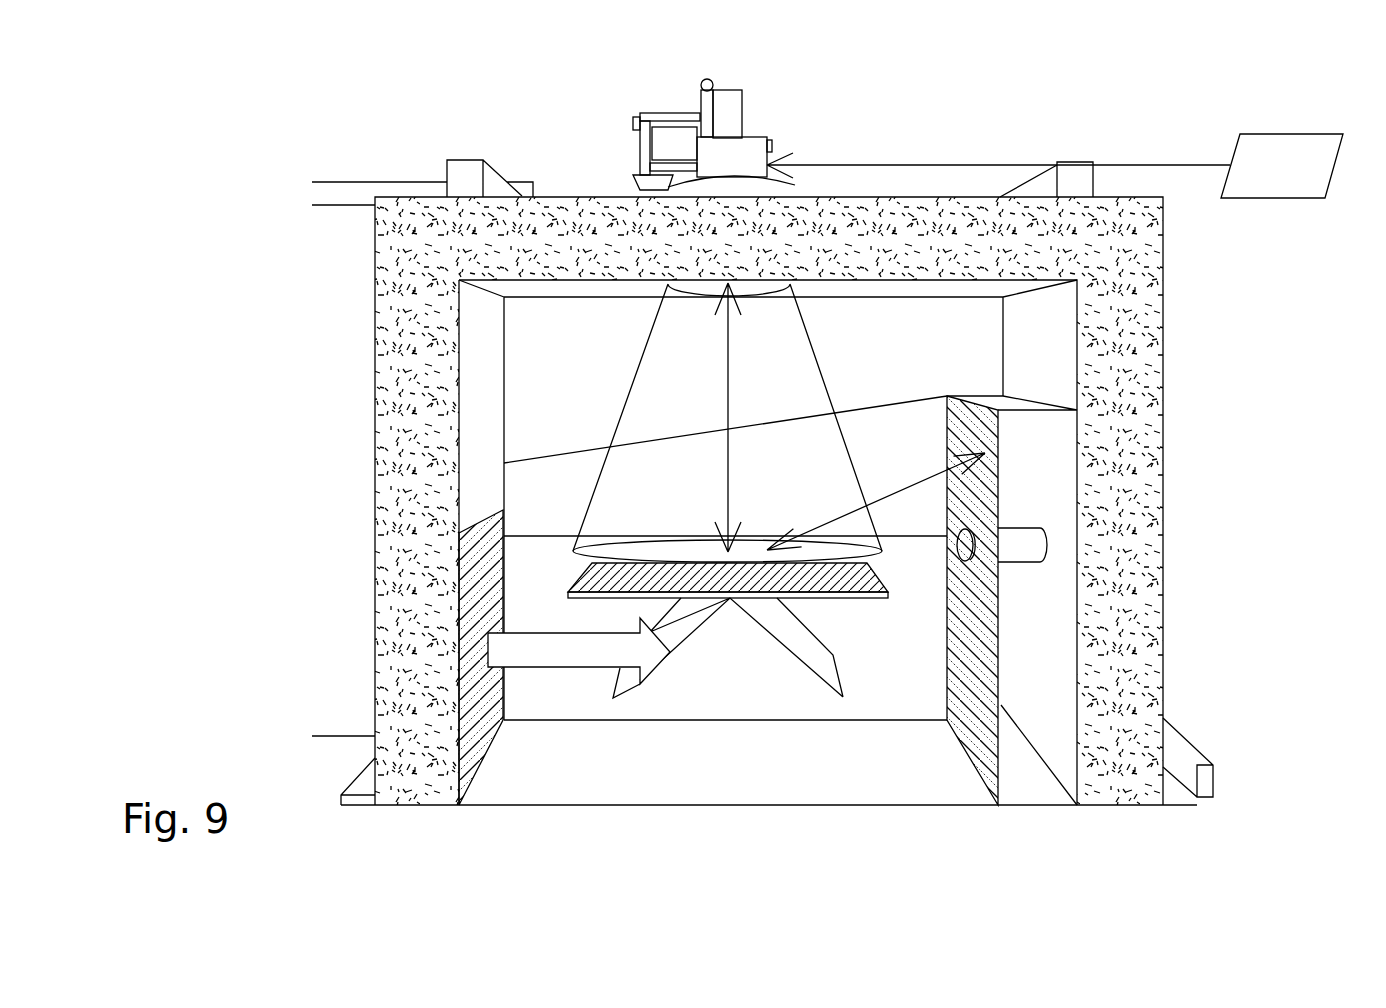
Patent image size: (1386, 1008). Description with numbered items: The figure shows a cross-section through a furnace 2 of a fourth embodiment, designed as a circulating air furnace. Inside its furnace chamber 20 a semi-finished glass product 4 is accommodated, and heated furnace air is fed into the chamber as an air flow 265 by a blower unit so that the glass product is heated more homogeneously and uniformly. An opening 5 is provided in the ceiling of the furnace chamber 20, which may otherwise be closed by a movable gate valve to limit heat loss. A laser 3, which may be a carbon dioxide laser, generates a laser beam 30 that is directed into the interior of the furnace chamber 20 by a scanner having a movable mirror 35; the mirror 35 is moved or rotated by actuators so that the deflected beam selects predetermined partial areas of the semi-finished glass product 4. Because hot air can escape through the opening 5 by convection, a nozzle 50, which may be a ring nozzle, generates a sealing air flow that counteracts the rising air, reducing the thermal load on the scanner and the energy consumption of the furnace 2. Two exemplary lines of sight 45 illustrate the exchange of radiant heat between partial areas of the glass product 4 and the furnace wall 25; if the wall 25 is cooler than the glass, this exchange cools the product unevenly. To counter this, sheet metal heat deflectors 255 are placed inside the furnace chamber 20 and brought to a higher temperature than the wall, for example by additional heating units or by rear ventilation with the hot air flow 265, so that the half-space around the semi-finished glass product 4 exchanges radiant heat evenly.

The furnace 2 is at (1164, 277).
The laser 3 is at (1274, 180).
The semi-finished glass product 4 is at (867, 600).
The opening 5 is at (684, 300).
The furnace chamber 20 is at (910, 348).
The furnace wall 25 is at (1150, 356).
The laser beam 30 is at (955, 165).
The movable mirror 35 is at (742, 120).
The line of sight 45 is at (733, 378).
The nozzle 50 is at (778, 188).
The sheet metal heat deflector 255 is at (480, 735).
The air flow 265 is at (580, 655).